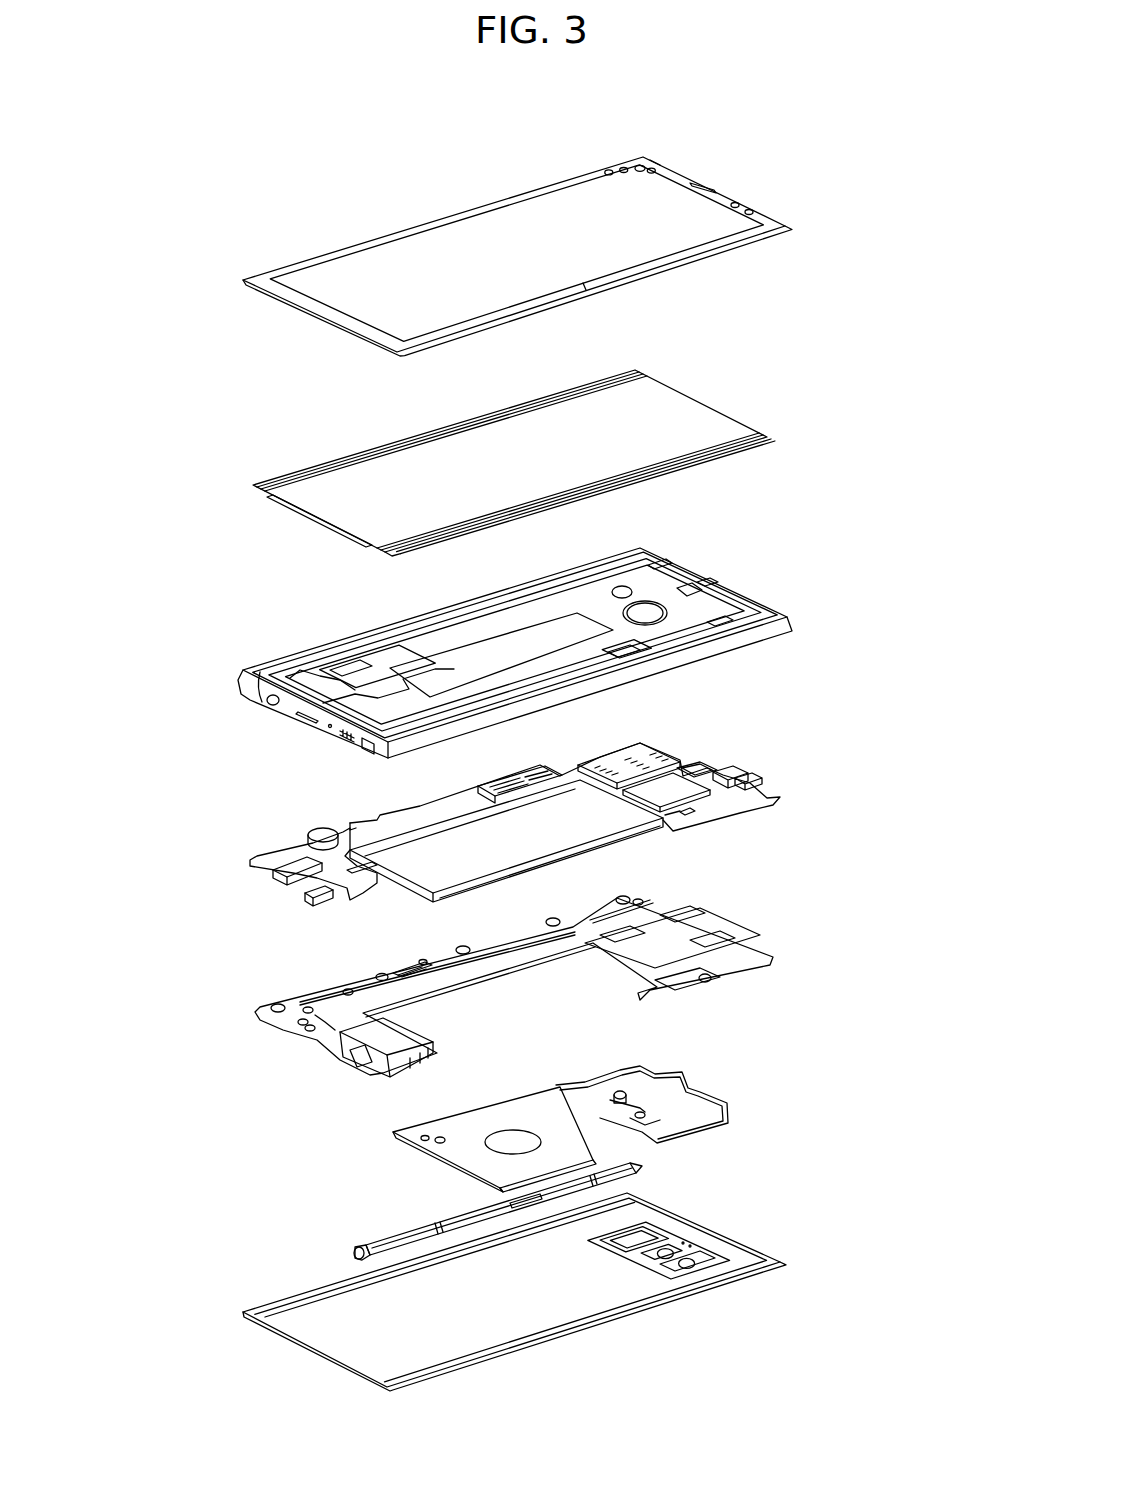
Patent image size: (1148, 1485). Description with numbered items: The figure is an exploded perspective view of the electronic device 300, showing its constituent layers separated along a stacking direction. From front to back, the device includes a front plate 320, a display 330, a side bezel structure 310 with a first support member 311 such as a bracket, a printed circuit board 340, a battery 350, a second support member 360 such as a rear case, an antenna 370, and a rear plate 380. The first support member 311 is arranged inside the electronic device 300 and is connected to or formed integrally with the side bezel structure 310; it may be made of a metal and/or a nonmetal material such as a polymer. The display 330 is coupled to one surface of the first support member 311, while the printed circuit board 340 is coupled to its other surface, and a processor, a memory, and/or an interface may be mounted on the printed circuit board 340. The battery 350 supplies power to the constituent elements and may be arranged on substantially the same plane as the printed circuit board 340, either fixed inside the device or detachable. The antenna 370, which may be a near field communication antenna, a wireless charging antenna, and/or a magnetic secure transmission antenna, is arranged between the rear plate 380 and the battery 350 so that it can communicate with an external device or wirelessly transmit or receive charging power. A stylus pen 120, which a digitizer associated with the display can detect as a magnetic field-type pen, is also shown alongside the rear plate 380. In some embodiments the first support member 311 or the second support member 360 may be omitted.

The electronic device 300 is at (210, 522).
The front plate 320 is at (786, 225).
The display 330 is at (770, 438).
The side bezel structure 310 is at (506, 653).
The first support member 311 is at (270, 703).
The printed circuit board 340 is at (775, 800).
The battery 350 is at (268, 862).
The second support member 360 is at (773, 957).
The antenna 370 is at (728, 1118).
The rear plate 380 is at (783, 1262).
The stylus pen 120 is at (357, 1250).